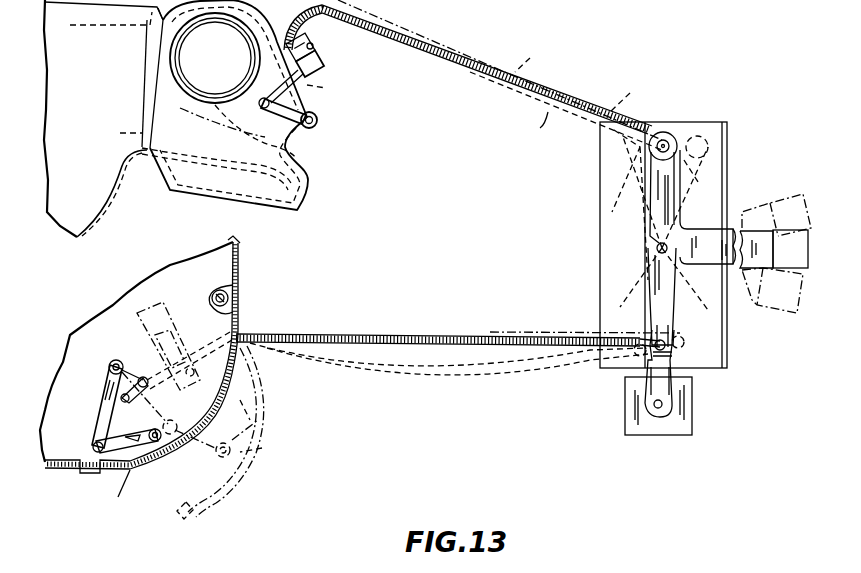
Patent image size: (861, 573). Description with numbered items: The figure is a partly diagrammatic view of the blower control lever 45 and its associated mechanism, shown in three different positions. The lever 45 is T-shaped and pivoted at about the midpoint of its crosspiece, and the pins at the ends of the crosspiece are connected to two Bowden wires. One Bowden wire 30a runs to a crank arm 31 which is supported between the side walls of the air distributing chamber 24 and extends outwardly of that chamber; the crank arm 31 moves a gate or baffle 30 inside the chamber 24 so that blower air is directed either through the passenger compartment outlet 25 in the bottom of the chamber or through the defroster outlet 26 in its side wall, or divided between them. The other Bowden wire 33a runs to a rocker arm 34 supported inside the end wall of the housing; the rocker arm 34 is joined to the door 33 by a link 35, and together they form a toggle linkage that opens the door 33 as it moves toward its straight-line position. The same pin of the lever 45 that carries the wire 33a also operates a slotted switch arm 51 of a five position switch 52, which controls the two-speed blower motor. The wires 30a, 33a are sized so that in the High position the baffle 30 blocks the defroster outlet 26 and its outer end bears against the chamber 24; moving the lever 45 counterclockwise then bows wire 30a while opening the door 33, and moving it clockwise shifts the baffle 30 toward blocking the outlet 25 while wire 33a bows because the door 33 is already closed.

The air distributing chamber 24 is at (175, 113).
The passenger compartment outlet 25 is at (177, 180).
The defroster outlet 26 is at (252, 62).
The baffle 30 is at (228, 126).
The Bowden wire 30a is at (323, 31).
The crank arm 31 is at (312, 172).
The door 33 is at (250, 438).
The Bowden wire 33a is at (270, 340).
The rocker arm 34 is at (110, 413).
The link 35 is at (112, 432).
The blower control lever 45 is at (708, 237).
The switch arm 51 is at (667, 385).
The switch 52 is at (683, 423).